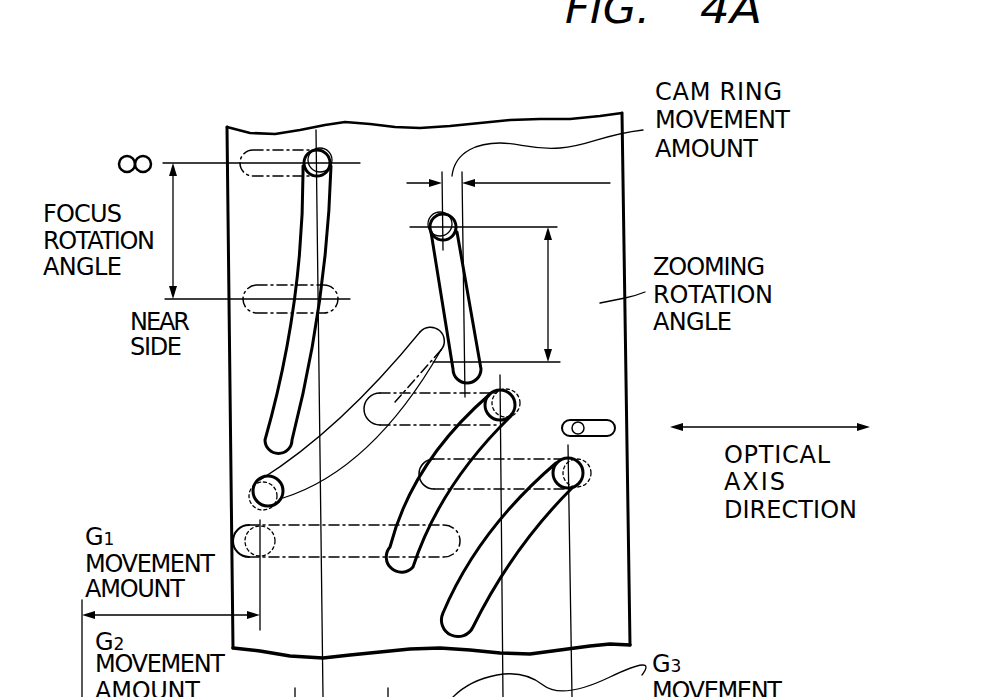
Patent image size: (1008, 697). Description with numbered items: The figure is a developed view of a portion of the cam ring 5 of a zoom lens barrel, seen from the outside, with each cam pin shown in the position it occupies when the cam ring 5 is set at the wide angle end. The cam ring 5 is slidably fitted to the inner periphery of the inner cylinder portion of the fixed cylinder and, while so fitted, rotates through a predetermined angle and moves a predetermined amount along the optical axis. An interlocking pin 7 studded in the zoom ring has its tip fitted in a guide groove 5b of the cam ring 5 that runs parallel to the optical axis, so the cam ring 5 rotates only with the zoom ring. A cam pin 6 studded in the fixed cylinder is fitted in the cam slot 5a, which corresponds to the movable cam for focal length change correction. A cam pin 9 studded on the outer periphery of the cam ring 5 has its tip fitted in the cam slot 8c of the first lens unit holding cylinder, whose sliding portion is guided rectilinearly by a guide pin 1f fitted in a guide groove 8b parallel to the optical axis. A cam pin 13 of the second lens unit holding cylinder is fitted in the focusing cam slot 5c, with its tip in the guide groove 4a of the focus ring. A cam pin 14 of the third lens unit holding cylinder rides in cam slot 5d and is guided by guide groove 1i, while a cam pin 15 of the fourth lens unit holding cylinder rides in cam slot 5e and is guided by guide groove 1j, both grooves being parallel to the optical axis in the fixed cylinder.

The cam ring 5 is at (623, 217).
The guide groove 4a is at (256, 152).
The cam pin 13 is at (310, 154).
The cam slot 5c is at (300, 349).
The cam pin 6 is at (434, 237).
The cam slot 5a is at (439, 288).
The cam pin 9 is at (259, 480).
The cam slot 8c is at (399, 357).
The guide groove 1i is at (402, 425).
The cam pin 14 is at (517, 399).
The guide groove 5b is at (607, 438).
The interlocking pin 7 is at (583, 421).
The guide groove 1j is at (593, 490).
The cam pin 15 is at (583, 495).
The guide pin 1f is at (236, 530).
The guide groove 8b is at (309, 558).
The cam slot 5d is at (393, 571).
The cam slot 5e is at (518, 547).